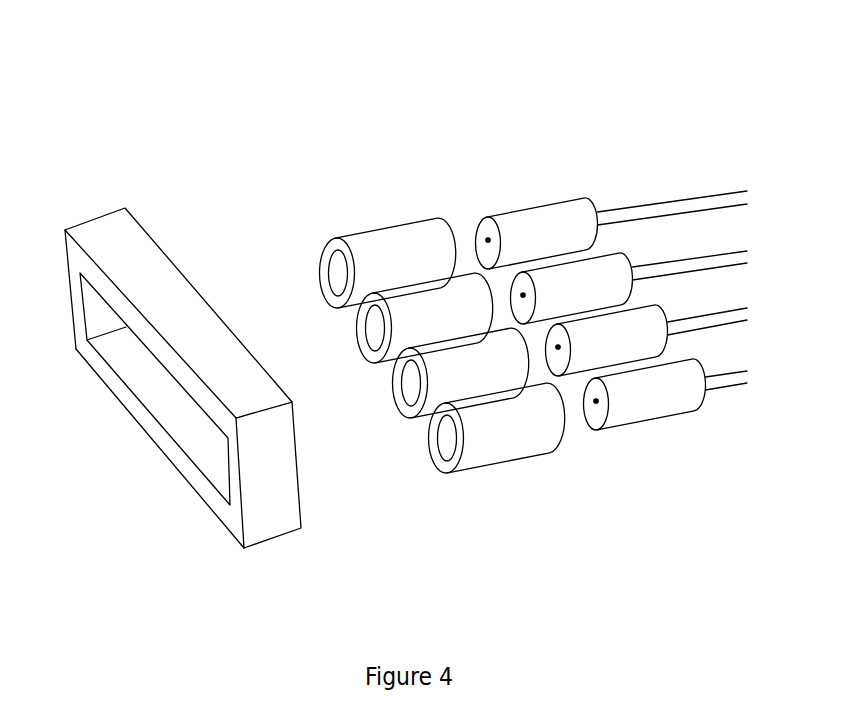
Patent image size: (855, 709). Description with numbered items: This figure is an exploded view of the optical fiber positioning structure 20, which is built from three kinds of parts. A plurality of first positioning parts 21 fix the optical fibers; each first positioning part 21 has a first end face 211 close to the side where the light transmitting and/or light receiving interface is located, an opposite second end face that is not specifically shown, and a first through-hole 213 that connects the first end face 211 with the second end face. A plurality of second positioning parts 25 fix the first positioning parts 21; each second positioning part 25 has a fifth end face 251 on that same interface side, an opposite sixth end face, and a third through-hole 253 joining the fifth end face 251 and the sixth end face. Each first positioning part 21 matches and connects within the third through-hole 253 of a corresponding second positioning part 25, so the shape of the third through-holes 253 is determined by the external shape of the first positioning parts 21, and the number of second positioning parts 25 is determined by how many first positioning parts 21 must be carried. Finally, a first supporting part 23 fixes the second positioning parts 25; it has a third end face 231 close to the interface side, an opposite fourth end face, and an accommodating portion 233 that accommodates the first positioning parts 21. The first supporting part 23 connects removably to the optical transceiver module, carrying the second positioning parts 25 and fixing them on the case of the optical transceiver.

The optical fiber positioning structure 20 is at (112, 92).
The first positioning part 21 is at (534, 203).
The first end face 211 is at (481, 218).
The first through-hole 213 is at (486, 237).
The first supporting part 23 is at (95, 217).
The third end face 231 is at (117, 396).
The accommodating portion 233 is at (205, 452).
The second positioning part 25 is at (371, 229).
The fifth end face 251 is at (322, 265).
The third through-hole 253 is at (335, 268).